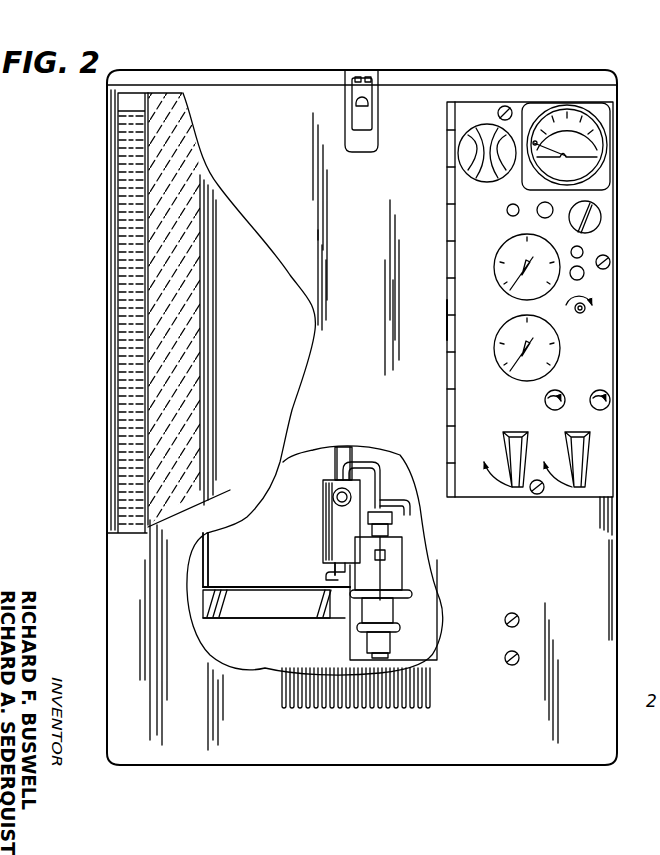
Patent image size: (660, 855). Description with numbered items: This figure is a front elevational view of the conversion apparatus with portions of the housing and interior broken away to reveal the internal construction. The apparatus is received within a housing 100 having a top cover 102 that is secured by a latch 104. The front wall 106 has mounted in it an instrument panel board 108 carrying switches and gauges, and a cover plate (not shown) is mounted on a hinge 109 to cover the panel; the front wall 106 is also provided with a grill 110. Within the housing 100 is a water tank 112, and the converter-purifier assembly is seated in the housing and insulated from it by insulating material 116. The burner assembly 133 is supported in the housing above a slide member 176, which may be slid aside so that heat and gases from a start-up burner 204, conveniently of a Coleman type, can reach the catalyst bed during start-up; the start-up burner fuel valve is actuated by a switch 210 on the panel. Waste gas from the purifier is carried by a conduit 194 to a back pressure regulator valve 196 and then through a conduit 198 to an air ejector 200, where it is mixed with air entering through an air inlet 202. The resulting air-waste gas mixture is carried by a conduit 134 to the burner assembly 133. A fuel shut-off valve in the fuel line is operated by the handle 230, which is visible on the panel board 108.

The housing 100 is at (104, 232).
The top cover 102 is at (228, 72).
The latch 104 is at (379, 100).
The front wall 106 is at (280, 160).
The instrument panel board 108 is at (618, 230).
The hinge 109 is at (452, 322).
The grill 110 is at (430, 694).
The water tank 112 is at (125, 358).
The insulating material 116 is at (160, 455).
The burner assembly 133 is at (303, 584).
The conduit 134 is at (328, 583).
The slide member 176 is at (277, 614).
The conduit 194 is at (385, 500).
The back pressure regulator valve 196 is at (405, 562).
The conduit 198 is at (364, 462).
The air ejector 200 is at (320, 533).
The air inlet 202 is at (323, 502).
The start-up burner 204 is at (290, 654).
The switch 210 is at (553, 390).
The fuel shut-off valve handle 230 is at (518, 430).